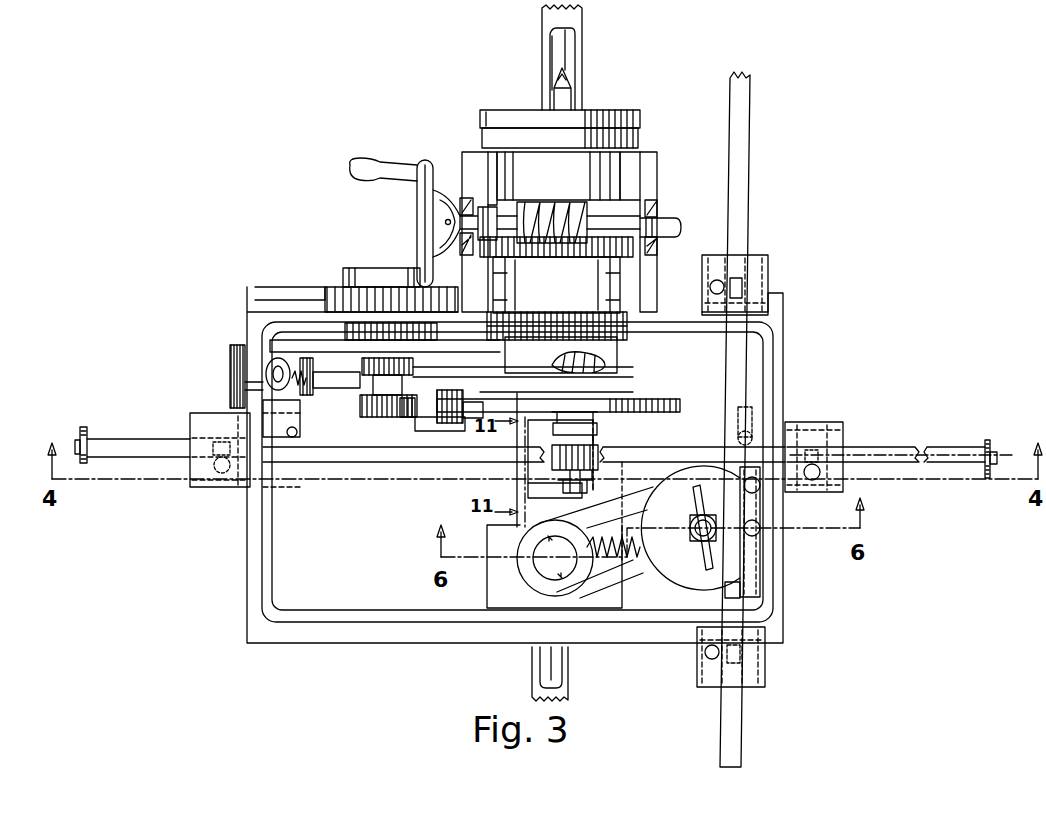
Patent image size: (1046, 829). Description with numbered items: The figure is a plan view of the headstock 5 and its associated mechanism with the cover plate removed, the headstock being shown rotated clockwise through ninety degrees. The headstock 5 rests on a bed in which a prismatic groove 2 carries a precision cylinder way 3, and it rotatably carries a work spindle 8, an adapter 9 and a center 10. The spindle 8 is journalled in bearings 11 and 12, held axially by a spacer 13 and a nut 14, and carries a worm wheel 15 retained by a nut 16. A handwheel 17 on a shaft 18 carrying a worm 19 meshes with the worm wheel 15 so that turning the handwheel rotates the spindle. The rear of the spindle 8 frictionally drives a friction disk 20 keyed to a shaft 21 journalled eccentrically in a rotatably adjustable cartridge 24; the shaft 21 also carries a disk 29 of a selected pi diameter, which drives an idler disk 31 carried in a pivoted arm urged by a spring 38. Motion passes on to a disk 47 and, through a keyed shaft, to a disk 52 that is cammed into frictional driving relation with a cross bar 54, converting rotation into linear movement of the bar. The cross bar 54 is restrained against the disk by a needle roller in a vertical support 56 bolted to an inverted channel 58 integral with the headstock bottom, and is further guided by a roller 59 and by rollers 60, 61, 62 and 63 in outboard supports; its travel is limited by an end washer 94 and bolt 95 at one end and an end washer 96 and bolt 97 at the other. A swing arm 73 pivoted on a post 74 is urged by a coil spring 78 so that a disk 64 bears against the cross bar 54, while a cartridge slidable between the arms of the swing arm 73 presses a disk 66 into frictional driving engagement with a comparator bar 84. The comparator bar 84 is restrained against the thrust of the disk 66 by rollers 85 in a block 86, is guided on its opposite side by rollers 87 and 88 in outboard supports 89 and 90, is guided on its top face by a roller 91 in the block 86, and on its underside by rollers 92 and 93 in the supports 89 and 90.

The prismatic groove 2 is at (583, 22).
The precision cylinder way 3 is at (576, 68).
The headstock 5 is at (263, 314).
The work spindle 8 is at (641, 142).
The adapter 9 is at (641, 121).
The center 10 is at (553, 85).
The bearing 11 is at (641, 186).
The bearing 12 is at (630, 290).
The spacer 13 is at (568, 312).
The nut 14 is at (628, 326).
The worm wheel 15 is at (655, 216).
The nut 16 is at (636, 250).
The handwheel 17 is at (375, 163).
The shaft 18 is at (496, 212).
The worm 19 is at (562, 204).
The friction disk 20 is at (318, 346).
The shaft 21 is at (373, 386).
The cartridge 24 is at (383, 276).
The disk 29 is at (372, 416).
The idler disk 31 is at (440, 432).
The spring 38 is at (263, 352).
The disk 47 is at (637, 400).
The disk 52 is at (604, 440).
The cross bar 54 is at (898, 448).
The vertical support 56 is at (530, 493).
The inverted channel 58 is at (594, 494).
The roller 59 is at (741, 437).
The roller 60 is at (214, 443).
The roller 61 is at (215, 466).
The roller 62 is at (816, 448).
The roller 63 is at (812, 480).
The disk 64 is at (668, 582).
The disk 66 is at (690, 531).
The swing arm 73 is at (541, 590).
The post 74 is at (585, 572).
The coil spring 78 is at (580, 520).
The comparator bar 84 is at (752, 97).
The rollers 85 is at (760, 528).
The block 86 is at (762, 581).
The roller 87 is at (700, 664).
The roller 88 is at (714, 282).
The outboard support 89 is at (705, 652).
The outboard support 90 is at (769, 270).
The roller 91 is at (725, 590).
The roller 92 is at (742, 660).
The roller 93 is at (743, 276).
The end washer 94 is at (986, 441).
The bolt 95 is at (998, 458).
The end washer 96 is at (84, 428).
The bolt 97 is at (78, 447).